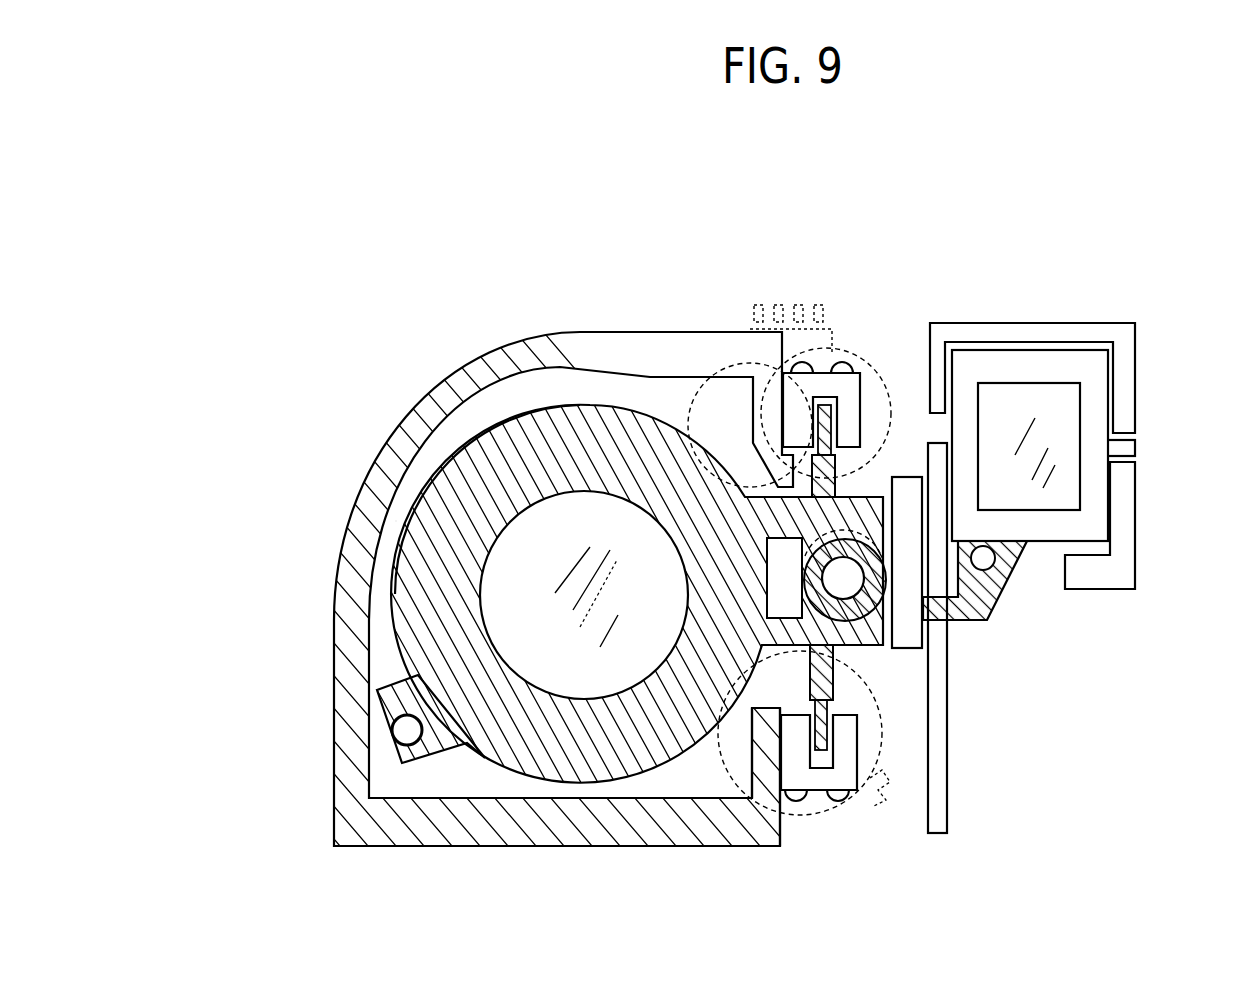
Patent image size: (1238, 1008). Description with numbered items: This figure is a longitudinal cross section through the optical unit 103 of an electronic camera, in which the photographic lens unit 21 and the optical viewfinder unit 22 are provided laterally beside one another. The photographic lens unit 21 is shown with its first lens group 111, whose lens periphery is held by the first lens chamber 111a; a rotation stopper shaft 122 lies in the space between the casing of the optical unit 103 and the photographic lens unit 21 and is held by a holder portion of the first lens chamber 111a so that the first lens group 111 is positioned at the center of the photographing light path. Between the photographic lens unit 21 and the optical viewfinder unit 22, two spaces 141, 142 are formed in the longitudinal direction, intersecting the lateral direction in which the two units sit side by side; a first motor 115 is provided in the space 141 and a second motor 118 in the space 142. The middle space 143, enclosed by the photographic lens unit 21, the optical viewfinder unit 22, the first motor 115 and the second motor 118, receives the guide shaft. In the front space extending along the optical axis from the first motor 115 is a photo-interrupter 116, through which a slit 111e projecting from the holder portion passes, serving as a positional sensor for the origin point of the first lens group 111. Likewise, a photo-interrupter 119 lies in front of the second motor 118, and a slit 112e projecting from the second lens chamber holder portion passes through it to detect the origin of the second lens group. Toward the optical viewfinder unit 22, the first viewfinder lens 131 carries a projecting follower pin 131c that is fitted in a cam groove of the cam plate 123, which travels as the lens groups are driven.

The photographic lens unit 21 is at (400, 520).
The optical viewfinder unit 22 is at (1148, 297).
The optical unit 103 is at (378, 444).
The first lens group 111 is at (577, 573).
The first lens chamber 111a is at (490, 473).
The slit 111e is at (822, 432).
The slit 112e is at (865, 745).
The first motor 115 is at (775, 298).
The photo-interrupter 116 is at (826, 387).
The second motor 118 is at (737, 748).
The photo-interrupter 119 is at (808, 780).
The rotation stopper shaft 122 is at (403, 735).
The cam plate 123 is at (947, 796).
The first viewfinder lens 131 is at (1040, 460).
The follower pin 131c is at (955, 619).
The space 141 is at (738, 410).
The space 142 is at (791, 686).
The middle space 143 is at (843, 587).